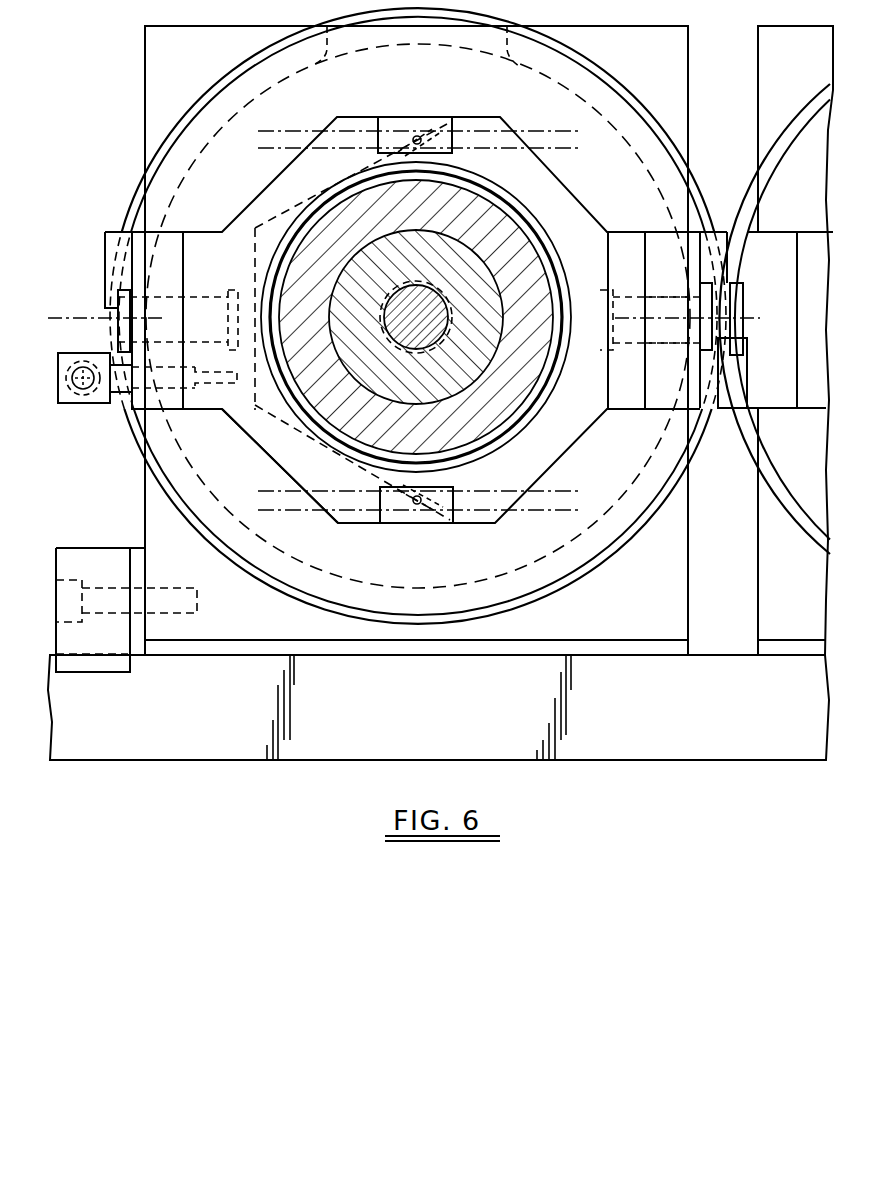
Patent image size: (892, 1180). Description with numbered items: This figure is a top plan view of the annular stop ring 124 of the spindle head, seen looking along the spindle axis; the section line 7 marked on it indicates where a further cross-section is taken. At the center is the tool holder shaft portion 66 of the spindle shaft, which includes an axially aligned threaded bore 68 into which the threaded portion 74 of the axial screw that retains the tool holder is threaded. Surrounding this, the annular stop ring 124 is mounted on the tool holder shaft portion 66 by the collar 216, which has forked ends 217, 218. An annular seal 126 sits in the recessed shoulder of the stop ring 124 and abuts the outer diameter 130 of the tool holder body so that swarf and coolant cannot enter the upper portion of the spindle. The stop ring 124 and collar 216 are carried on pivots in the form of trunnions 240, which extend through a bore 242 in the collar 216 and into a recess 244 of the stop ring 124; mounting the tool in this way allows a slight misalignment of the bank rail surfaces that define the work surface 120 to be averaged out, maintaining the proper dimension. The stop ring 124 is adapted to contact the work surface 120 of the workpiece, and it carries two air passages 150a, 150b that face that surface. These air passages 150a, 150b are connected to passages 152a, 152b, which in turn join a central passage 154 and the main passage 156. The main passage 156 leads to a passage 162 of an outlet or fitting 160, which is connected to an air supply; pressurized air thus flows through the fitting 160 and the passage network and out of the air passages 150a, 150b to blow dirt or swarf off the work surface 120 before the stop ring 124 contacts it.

The section line 7- 7 is at (57, 316).
The tool holder shaft portion 66 is at (412, 403).
The threaded bore 68 is at (421, 293).
The threaded portion 74 is at (427, 342).
The work surface 120 is at (545, 135).
The annular stop ring 124 is at (221, 229).
The annular seal 126 is at (515, 425).
The outer diameter 130 is at (560, 218).
The air passage 150a is at (418, 508).
The air passage 150b is at (426, 124).
The passage 152a is at (355, 460).
The passage 152b is at (332, 200).
The central passage 154 is at (283, 471).
The main passage 156 is at (253, 432).
The outlet or fitting 160 is at (95, 405).
The passage 162 is at (90, 362).
The collar 216 is at (177, 124).
The forked end 217 is at (147, 423).
The forked end 218 is at (660, 413).
The trunnions 240 is at (112, 297).
The bore 242 is at (655, 353).
The recess 244 is at (617, 292).